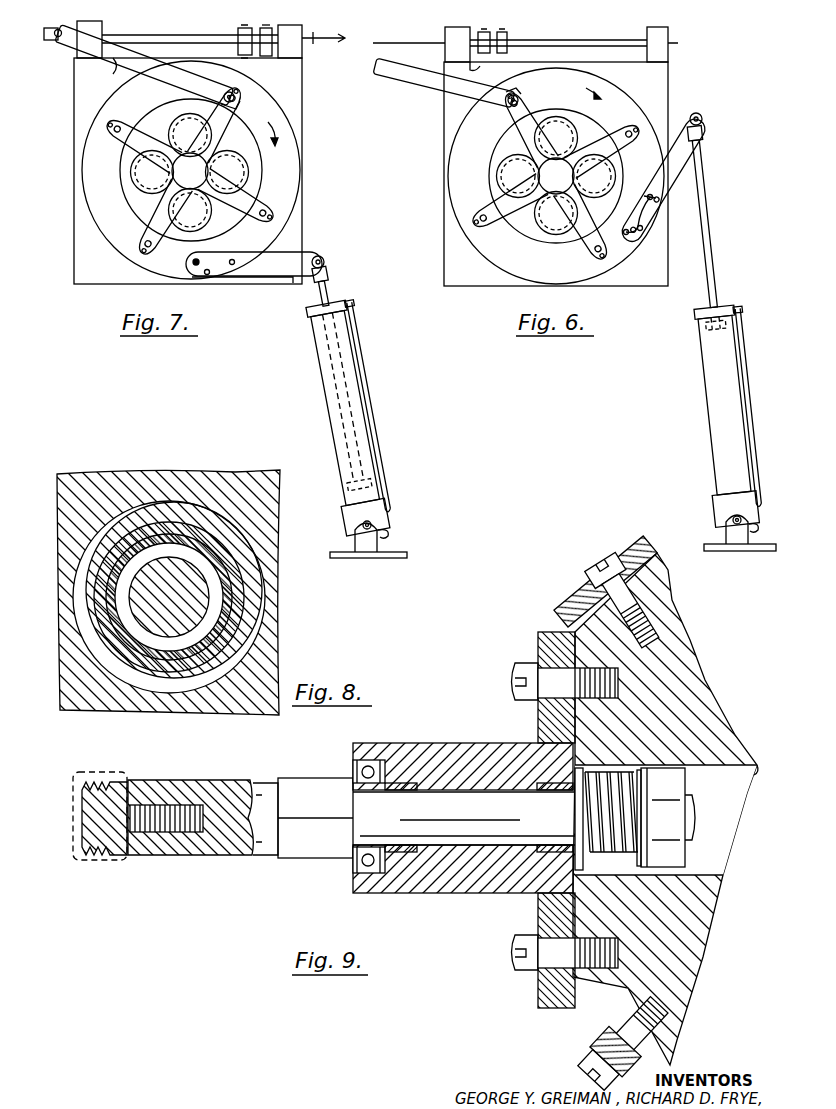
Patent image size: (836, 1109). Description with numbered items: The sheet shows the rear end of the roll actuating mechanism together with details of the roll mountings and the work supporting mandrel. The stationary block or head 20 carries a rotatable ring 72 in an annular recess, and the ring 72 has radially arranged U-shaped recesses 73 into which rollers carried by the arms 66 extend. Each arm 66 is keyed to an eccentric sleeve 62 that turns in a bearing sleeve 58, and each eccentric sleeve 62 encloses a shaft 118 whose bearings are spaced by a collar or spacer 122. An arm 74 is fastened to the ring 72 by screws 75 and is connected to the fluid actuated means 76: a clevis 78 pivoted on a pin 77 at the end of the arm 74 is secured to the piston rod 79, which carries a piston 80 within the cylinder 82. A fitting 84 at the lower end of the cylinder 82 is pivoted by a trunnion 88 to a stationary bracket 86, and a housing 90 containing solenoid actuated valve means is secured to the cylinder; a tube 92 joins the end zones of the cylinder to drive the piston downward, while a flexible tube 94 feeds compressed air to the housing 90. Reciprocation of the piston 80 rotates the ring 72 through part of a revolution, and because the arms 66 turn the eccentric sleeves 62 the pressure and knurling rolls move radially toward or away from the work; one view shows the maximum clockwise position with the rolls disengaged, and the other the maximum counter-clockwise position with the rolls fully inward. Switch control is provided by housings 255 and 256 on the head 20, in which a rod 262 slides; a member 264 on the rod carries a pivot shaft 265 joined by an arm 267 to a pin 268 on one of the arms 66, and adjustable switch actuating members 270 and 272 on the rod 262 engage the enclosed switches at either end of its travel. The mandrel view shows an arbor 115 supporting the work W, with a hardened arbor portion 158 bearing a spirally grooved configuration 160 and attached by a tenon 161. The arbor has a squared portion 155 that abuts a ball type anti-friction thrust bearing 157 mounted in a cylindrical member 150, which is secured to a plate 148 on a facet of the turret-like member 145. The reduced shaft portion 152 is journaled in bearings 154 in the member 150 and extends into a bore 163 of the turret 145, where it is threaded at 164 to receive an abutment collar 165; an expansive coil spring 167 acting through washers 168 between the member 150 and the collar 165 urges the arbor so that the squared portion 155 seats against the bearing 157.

In FIG. 7, the block or head 20 is at (302, 172).
In FIG. 6, the block or head 20 is at (444, 250).
In FIG. 8, the bearing sleeve 58 is at (233, 657).
In FIG. 8, the eccentric sleeve 62 is at (223, 645).
In FIG. 7, the arm 66 is at (228, 112).
In FIG. 6, the arm 66 is at (530, 105).
In FIG. 7, the ring 72 is at (299, 150).
In FIG. 6, the ring 72 is at (618, 98).
In FIG. 7, the U-shaped recesses 73 is at (276, 216).
In FIG. 6, the U-shaped recesses 73 is at (635, 128).
In FIG. 7, the arm 74 is at (300, 280).
In FIG. 6, the arm 74 is at (663, 174).
In FIG. 6, the screws 75 is at (656, 232).
In FIG. 7, the fluid actuated means 76 is at (347, 440).
In FIG. 6, the fluid actuated means 76 is at (729, 427).
In FIG. 7, the pin 77 is at (322, 256).
In FIG. 6, the pin 77 is at (702, 118).
In FIG. 7, the clevis 78 is at (328, 268).
In FIG. 6, the clevis 78 is at (705, 132).
In FIG. 6, the piston rod 79 is at (709, 180).
In FIG. 7, the piston 80 is at (374, 488).
In FIG. 6, the piston 80 is at (727, 320).
In FIG. 7, the cylinder 82 is at (326, 380).
In FIG. 6, the cylinder 82 is at (700, 356).
In FIG. 7, the fitting 84 is at (376, 508).
In FIG. 6, the fitting 84 is at (726, 506).
In FIG. 7, the stationary bracket 86 is at (388, 558).
In FIG. 6, the stationary bracket 86 is at (726, 540).
In FIG. 7, the trunnion 88 is at (372, 524).
In FIG. 6, the trunnion 88 is at (733, 520).
In FIG. 7, the housing 90 is at (392, 518).
In FIG. 6, the housing 90 is at (752, 518).
In FIG. 7, the tube 92 is at (370, 382).
In FIG. 6, the tube 92 is at (758, 406).
In FIG. 7, the flexible tube 94 is at (396, 536).
In FIG. 6, the flexible tube 94 is at (760, 532).
In FIG. 9, the arbor 115 is at (192, 780).
In FIG. 8, the shaft 118 is at (215, 605).
In FIG. 8, the collar or spacer 122 is at (213, 623).
In FIG. 9, the turret-like member 145 is at (702, 962).
In FIG. 9, the plate 148 is at (570, 602).
In FIG. 9, the cylindrical member 150 is at (460, 894).
In FIG. 9, the shaft portion 152 is at (440, 806).
In FIG. 9, the bearings 154 is at (410, 876).
In FIG. 9, the squared portion 155 is at (310, 860).
In FIG. 9, the anti-friction thrust bearing 157 is at (350, 766).
In FIG. 9, the arbor portion 158 is at (104, 850).
In FIG. 9, the spirally grooved configuration 160 is at (104, 782).
In FIG. 9, the tenon 161 is at (172, 836).
In FIG. 9, the bore 163 is at (757, 765).
In FIG. 9, the threaded portion 164 is at (696, 826).
In FIG. 9, the abutment collar 165 is at (686, 787).
In FIG. 9, the coil spring 167 is at (610, 778).
In FIG. 9, the washers 168 is at (622, 868).
In FIG. 7, the housing 255 is at (310, 36).
In FIG. 6, the housing 255 is at (672, 40).
In FIG. 7, the housing 256 is at (76, 66).
In FIG. 6, the housing 256 is at (446, 34).
In FIG. 7, the rod 262 is at (174, 36).
In FIG. 6, the rod 262 is at (598, 40).
In FIG. 7, the member 264 is at (47, 40).
In FIG. 7, the pivot shaft 265 is at (62, 33).
In FIG. 7, the arm 267 is at (116, 74).
In FIG. 7, the pin 268 is at (240, 104).
In FIG. 6, the pin 268 is at (510, 104).
In FIG. 7, the switch actuating member 270 is at (262, 57).
In FIG. 6, the switch actuating member 270 is at (509, 50).
In FIG. 7, the switch actuating member 272 is at (238, 52).
In FIG. 6, the switch actuating member 272 is at (484, 62).